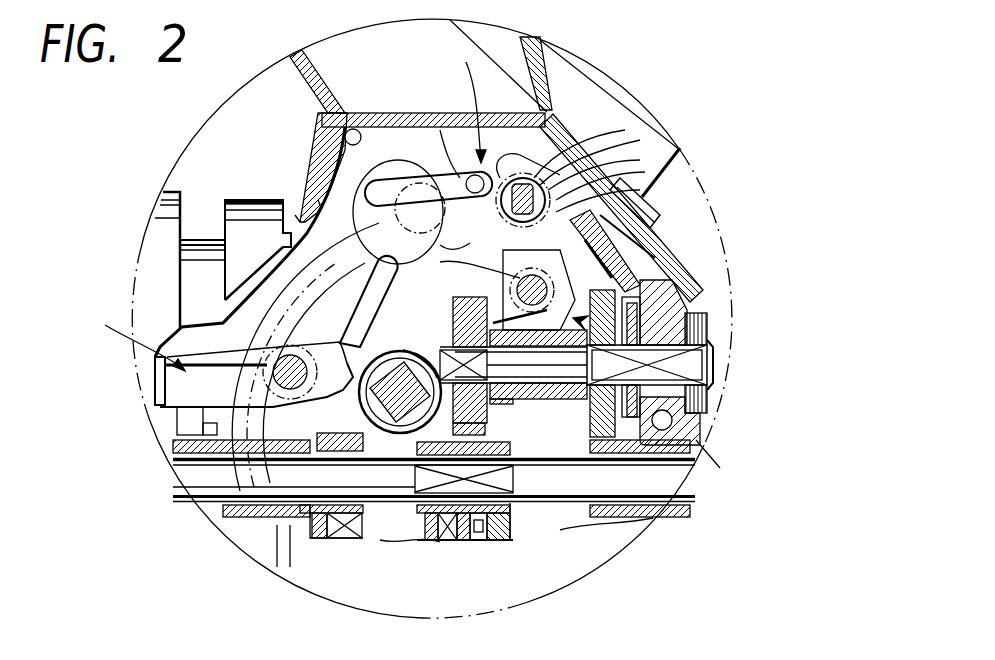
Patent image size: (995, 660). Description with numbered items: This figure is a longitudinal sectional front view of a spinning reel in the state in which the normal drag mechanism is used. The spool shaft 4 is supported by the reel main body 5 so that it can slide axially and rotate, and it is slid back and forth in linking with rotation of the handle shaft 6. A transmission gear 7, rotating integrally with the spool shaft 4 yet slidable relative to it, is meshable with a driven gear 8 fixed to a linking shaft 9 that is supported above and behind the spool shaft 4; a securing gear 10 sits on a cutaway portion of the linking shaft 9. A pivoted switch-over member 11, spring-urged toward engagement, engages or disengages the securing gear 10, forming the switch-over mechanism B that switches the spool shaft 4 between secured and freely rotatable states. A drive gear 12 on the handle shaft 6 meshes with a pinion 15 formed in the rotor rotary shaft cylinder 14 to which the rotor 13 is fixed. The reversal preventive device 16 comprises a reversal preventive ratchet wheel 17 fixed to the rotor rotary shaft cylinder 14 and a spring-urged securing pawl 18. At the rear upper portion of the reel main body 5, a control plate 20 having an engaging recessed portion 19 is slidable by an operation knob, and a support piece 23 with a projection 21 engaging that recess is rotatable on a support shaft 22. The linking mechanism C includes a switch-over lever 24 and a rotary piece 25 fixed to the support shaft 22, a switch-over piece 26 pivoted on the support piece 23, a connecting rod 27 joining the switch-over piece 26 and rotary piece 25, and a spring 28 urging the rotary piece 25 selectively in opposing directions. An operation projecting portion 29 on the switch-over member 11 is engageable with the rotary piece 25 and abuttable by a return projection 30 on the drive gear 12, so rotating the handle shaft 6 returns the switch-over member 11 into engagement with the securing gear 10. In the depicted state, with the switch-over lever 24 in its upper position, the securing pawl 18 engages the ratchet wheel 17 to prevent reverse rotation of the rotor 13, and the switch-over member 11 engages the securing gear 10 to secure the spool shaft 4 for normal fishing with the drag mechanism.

The spool shaft 4 is at (215, 505).
The reel main body 5 is at (420, 113).
The handle shaft 6 is at (388, 357).
The transmission gear 7 is at (478, 540).
The driven gear 8 is at (505, 530).
The linking shaft 9 is at (527, 384).
The securing gear 10 is at (660, 318).
The switch-over member 11 is at (560, 300).
The drive gear 12 is at (340, 120).
The rotor 13 is at (230, 197).
The rotor rotary shaft cylinder 14 is at (200, 455).
The pinion 15 is at (215, 470).
The reversal preventive device 16 is at (129, 335).
The reversal preventive ratchet wheel 17 is at (165, 420).
The securing pawl 18 is at (195, 398).
The engaging recessed portion 19 is at (665, 170).
The control plate 20 is at (610, 165).
The projection 21 is at (590, 185).
The support shaft 22 is at (585, 150).
The support piece 23 is at (560, 150).
The switch-over lever 24 is at (545, 42).
The rotary piece 25 is at (440, 130).
The switch-over piece 26 is at (383, 178).
The connecting rod 27 is at (412, 180).
The spring 28 is at (615, 265).
The operation projecting portion 29 is at (545, 180).
The return projection 30 is at (515, 182).
The switch-over mechanism B is at (654, 403).
The linking mechanism C is at (471, 102).